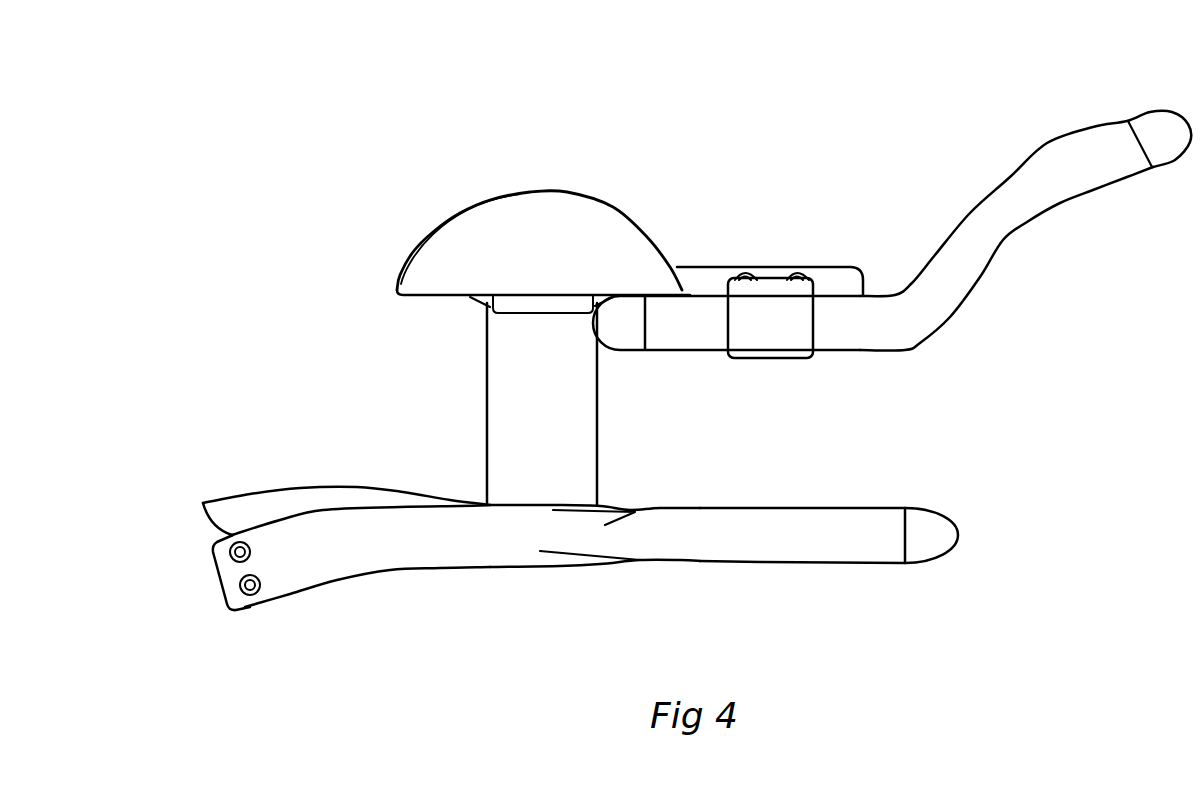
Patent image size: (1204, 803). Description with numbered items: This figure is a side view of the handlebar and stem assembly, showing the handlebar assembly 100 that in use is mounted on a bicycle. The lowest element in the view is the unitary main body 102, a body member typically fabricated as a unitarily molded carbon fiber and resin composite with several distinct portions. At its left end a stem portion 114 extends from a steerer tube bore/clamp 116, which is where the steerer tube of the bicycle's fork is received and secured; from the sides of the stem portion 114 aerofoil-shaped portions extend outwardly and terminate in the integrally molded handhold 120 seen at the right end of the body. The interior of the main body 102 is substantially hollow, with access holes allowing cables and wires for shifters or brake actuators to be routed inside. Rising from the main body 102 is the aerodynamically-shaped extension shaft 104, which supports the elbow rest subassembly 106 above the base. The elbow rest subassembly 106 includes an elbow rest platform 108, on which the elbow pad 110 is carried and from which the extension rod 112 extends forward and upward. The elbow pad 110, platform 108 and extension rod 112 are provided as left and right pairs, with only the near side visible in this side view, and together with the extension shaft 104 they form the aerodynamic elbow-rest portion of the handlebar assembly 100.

The handlebar assembly 100 is at (167, 152).
The unitary main body 102 is at (480, 540).
The extension shaft 104 is at (570, 455).
The elbow rest subassembly 106 is at (808, 143).
The elbow rest platform 108 is at (700, 287).
The elbow pad 110 is at (462, 258).
The extension rod 112 is at (977, 240).
The stem portion 114 is at (337, 563).
The steerer tube bore/clamp 116 is at (265, 568).
The handhold 120 is at (807, 548).